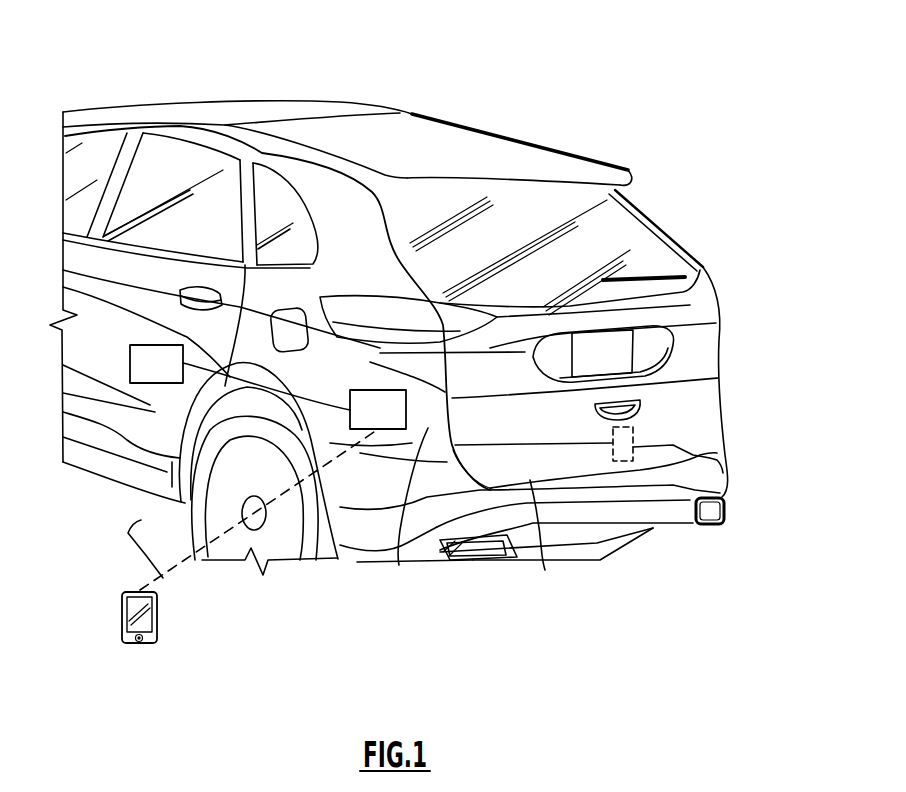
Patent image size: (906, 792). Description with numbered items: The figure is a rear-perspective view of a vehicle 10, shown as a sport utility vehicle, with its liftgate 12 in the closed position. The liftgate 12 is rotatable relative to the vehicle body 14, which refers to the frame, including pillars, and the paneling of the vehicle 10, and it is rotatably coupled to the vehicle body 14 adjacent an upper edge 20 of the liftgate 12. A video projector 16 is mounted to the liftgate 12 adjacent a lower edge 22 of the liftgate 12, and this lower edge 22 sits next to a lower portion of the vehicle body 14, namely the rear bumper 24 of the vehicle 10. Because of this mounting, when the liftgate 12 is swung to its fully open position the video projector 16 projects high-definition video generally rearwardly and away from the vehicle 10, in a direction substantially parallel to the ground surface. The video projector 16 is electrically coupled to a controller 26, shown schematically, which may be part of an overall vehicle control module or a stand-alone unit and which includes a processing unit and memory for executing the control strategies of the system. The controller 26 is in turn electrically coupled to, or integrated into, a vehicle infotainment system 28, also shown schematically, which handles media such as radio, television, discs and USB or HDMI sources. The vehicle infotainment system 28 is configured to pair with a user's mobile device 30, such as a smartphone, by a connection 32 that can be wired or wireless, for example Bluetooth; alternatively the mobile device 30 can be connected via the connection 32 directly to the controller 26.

The vehicle 10 is at (718, 252).
The liftgate 12 is at (706, 390).
The vehicle body 14 is at (399, 565).
The video projector 16 is at (727, 473).
The upper edge 20 is at (474, 170).
The lower edge 22 is at (545, 570).
The rear bumper 24 is at (660, 517).
The controller 26 is at (612, 440).
The vehicle infotainment system 28 is at (140, 590).
The mobile device 30 is at (158, 618).
The connection 32 is at (128, 533).